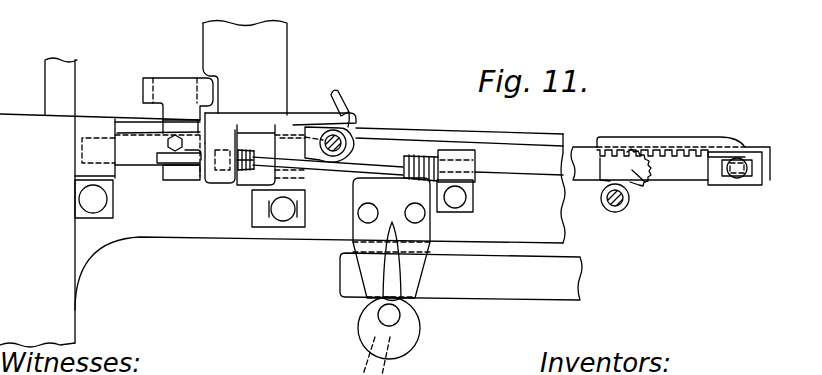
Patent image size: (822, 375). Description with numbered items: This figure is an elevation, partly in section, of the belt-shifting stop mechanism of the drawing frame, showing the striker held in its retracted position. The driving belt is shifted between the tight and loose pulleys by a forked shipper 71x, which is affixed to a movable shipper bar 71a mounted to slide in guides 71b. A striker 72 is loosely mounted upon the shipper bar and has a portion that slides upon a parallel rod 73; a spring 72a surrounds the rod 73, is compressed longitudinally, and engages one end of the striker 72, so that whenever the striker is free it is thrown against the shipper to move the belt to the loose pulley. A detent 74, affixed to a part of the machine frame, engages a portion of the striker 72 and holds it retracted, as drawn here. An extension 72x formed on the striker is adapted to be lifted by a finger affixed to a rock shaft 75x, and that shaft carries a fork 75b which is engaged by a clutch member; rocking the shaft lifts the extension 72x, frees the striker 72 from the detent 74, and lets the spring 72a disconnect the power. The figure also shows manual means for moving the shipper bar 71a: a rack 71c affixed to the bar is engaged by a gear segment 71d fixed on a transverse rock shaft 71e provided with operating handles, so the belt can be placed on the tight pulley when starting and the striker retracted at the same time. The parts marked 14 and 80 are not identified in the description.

The upright post 14 is at (249, 57).
The upper member 80 is at (569, 9).
The forked shipper 71x is at (143, 78).
The guides 71b is at (82, 129).
The shipper bar 71a is at (135, 166).
The rack 71c is at (668, 142).
The gear segment 71d is at (640, 178).
The rock shaft 71e is at (615, 207).
The striker 72 is at (250, 120).
The spring 72a is at (422, 160).
The extension 72x is at (322, 118).
The rod 73 is at (392, 163).
The detent 74 is at (253, 182).
The fork 75b is at (341, 100).
The rock shaft 75x is at (333, 158).